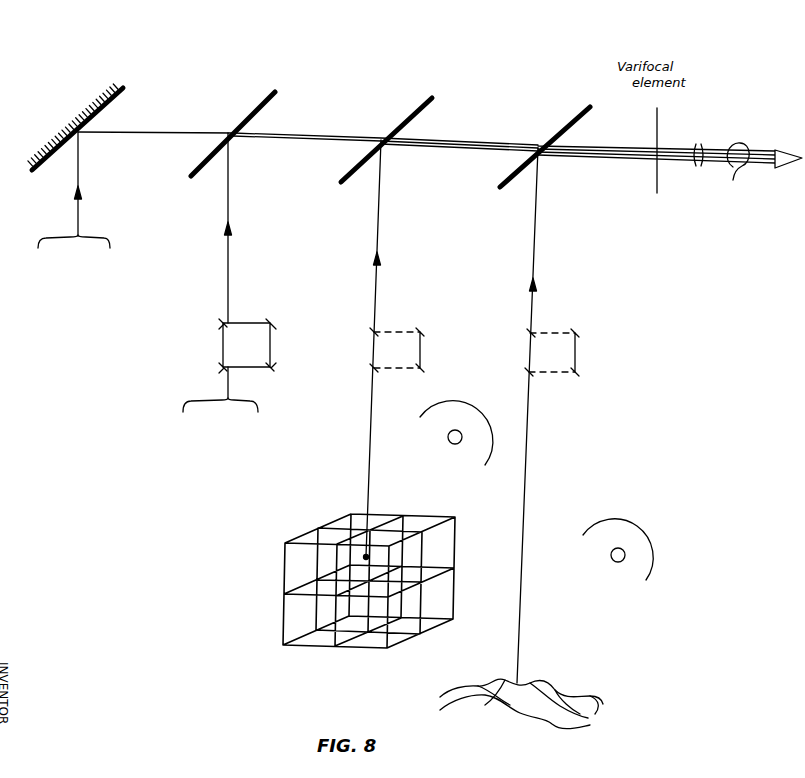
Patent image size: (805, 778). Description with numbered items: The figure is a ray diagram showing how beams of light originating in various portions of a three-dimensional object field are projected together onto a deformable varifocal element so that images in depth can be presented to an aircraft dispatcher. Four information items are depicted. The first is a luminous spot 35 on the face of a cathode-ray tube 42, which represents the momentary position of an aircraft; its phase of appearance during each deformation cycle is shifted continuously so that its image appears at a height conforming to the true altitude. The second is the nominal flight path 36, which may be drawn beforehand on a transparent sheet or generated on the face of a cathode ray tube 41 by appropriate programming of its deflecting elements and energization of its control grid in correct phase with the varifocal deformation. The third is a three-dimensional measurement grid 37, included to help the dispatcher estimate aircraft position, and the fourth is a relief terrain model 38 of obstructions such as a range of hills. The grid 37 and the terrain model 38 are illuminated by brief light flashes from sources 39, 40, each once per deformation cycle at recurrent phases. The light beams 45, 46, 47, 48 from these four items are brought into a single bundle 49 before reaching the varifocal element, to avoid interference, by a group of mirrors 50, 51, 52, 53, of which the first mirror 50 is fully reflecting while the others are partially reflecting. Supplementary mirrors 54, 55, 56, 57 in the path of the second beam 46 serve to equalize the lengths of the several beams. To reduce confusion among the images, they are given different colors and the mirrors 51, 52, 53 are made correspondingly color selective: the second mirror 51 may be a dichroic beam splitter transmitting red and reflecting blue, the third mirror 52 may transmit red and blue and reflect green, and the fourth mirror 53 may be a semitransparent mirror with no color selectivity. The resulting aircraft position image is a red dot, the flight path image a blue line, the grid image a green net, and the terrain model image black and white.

The luminous spot 35 is at (78, 235).
The nominal flight path information item 36 is at (228, 398).
The three-dimensional grid 37 is at (452, 550).
The relief model 38 is at (580, 687).
The light flash source 39 is at (448, 438).
The light flash source 40 is at (611, 556).
The cathode ray tube 41 is at (258, 410).
The cathode-ray tube 42 is at (110, 246).
The light beam 45 is at (77, 170).
The light beam 46 is at (227, 186).
The light beam 47 is at (378, 200).
The light beam 48 is at (535, 200).
The single bundle 49 is at (734, 173).
The fully reflecting mirror 50 is at (120, 93).
The dichroic beam splitter 51 is at (262, 104).
The partially reflecting mirror 52 is at (425, 108).
The semitransparent mirror 53 is at (580, 115).
The supplementary mirror 54 is at (222, 366).
The supplementary mirror 55 is at (272, 366).
The supplementary mirror 56 is at (272, 324).
The supplementary mirror 57 is at (224, 322).